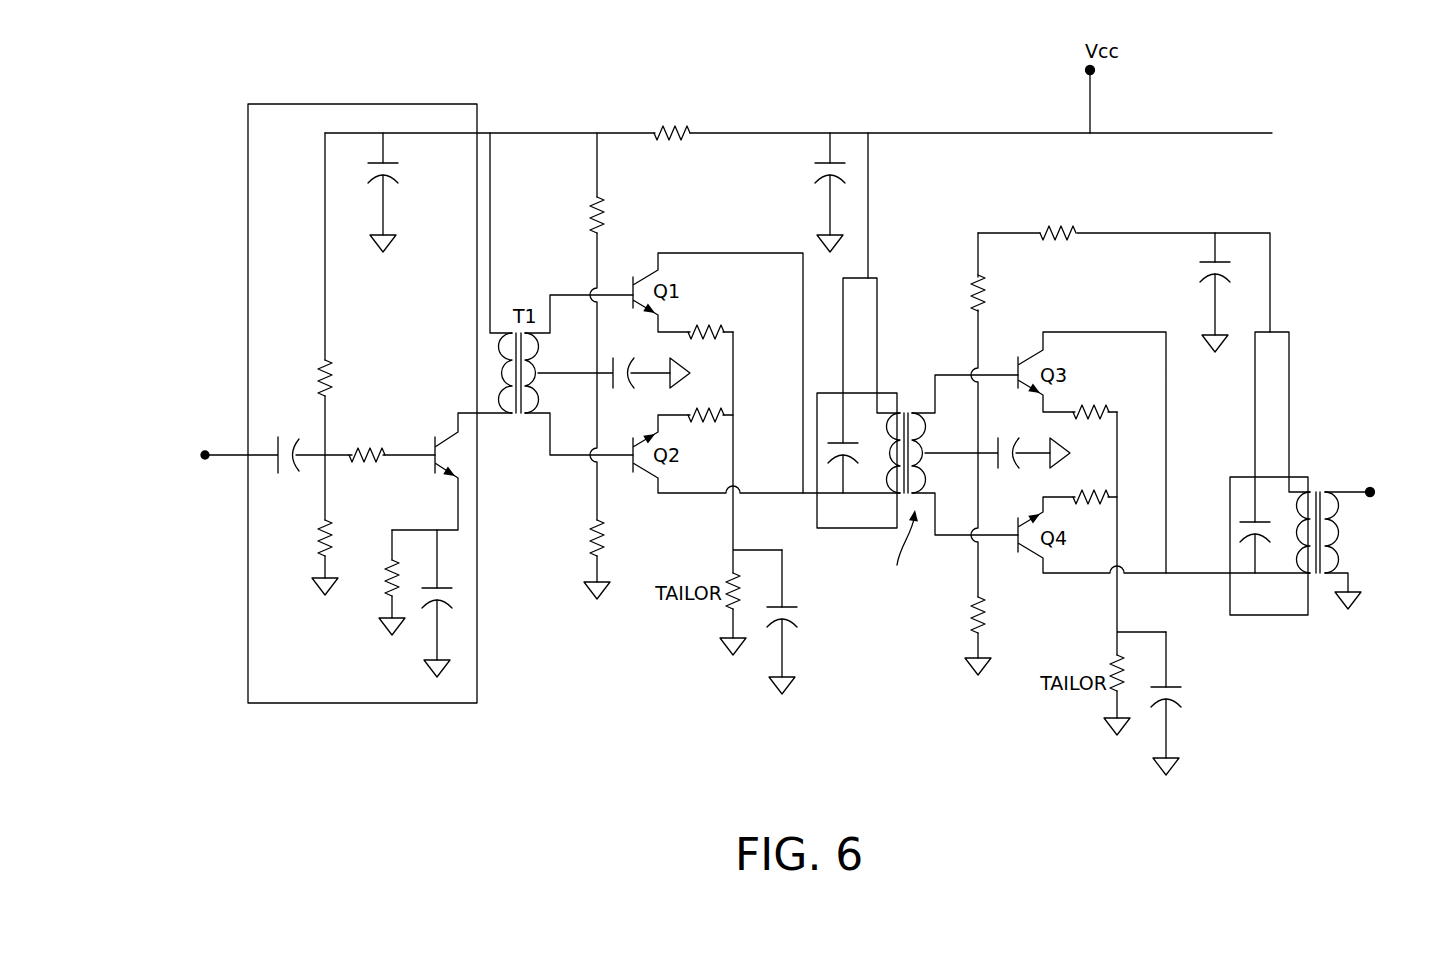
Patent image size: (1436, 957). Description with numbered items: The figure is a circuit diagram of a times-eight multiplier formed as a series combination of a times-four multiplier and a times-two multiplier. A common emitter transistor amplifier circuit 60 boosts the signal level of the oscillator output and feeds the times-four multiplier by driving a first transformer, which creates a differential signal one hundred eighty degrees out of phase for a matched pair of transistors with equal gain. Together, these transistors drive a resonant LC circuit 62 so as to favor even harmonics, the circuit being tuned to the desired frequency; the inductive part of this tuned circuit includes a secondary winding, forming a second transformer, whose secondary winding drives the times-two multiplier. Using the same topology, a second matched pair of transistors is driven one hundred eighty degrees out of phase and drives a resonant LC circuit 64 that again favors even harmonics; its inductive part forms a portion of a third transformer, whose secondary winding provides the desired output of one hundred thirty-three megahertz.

The common emitter transistor amplifier circuit 60 is at (363, 703).
The resonant LC circuit 62 is at (858, 528).
The resonant LC circuit 64 is at (1272, 615).